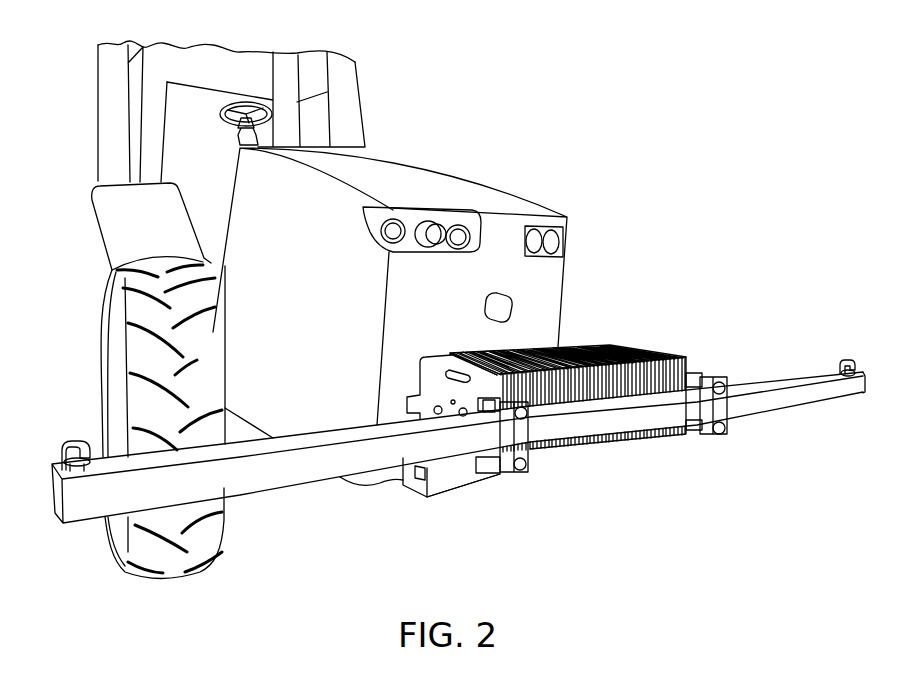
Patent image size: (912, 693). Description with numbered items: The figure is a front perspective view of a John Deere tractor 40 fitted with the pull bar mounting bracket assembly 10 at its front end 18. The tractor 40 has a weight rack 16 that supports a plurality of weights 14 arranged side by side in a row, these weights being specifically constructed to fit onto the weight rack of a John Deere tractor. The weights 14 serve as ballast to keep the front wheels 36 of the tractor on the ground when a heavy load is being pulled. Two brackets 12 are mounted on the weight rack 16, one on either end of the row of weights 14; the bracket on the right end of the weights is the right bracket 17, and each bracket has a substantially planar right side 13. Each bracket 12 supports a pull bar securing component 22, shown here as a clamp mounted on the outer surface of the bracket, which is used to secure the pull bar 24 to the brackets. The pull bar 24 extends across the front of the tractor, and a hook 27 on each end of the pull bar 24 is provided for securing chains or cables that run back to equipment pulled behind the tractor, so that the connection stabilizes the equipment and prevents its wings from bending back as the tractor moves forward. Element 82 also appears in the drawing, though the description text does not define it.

The pull bar mounting bracket assembly 10 is at (633, 330).
The bracket 12 is at (680, 350).
The right side 13 is at (416, 496).
The weights 14 is at (613, 448).
The weight rack 16 is at (410, 405).
The right bracket 17 is at (443, 483).
The front end 18 is at (553, 272).
The pull bar securing component 22 is at (530, 457).
The pull bar 24 is at (798, 388).
The hook 27 is at (68, 440).
The front wheels 36 is at (123, 298).
The John Deere tractor 40 is at (503, 192).
The lower fins 82 is at (657, 468).